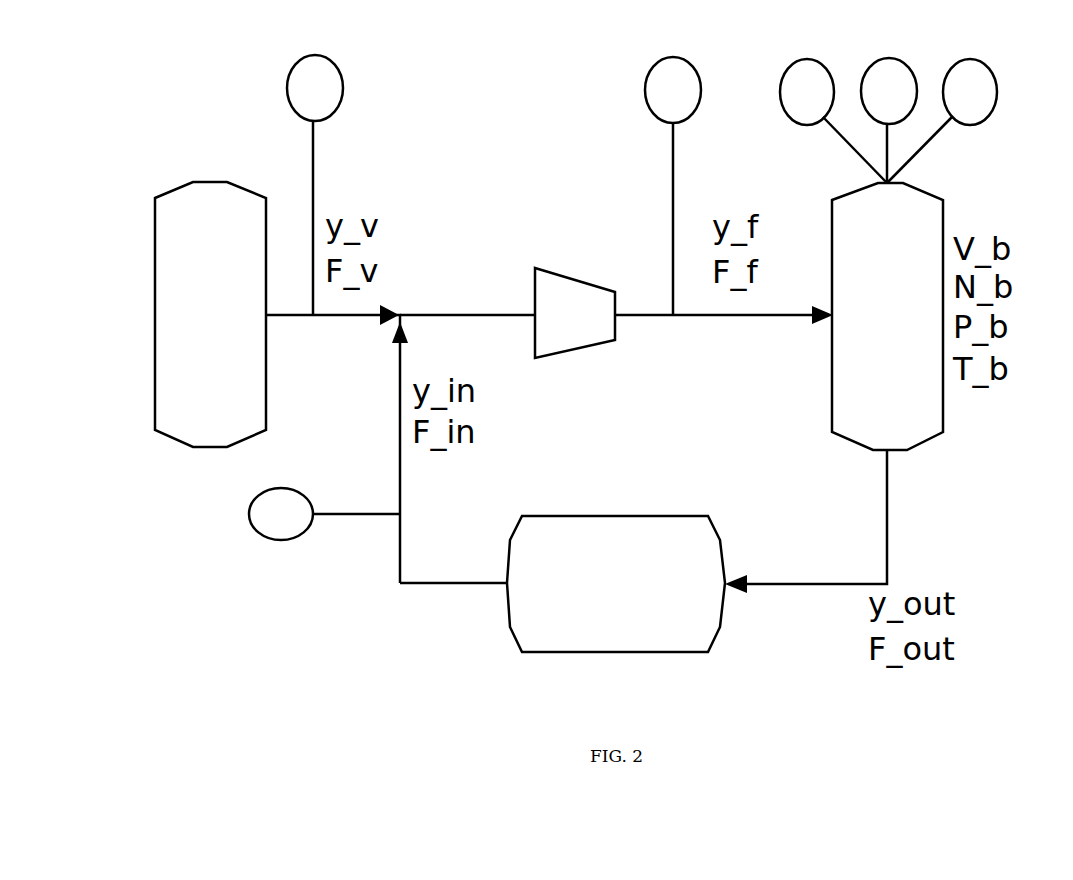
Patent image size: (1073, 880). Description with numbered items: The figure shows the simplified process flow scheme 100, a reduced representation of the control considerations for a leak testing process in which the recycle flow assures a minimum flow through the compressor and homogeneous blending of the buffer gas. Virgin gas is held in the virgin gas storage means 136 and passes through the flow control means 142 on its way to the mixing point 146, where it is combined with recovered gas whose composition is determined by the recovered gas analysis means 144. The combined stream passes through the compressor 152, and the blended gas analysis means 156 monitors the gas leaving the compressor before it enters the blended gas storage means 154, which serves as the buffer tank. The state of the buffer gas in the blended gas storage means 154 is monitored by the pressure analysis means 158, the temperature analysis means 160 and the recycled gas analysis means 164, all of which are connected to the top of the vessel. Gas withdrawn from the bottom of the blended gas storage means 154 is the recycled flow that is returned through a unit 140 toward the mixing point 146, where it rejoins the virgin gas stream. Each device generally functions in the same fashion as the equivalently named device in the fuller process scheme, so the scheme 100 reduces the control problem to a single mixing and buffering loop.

The simplified process flow scheme 100 is at (493, 78).
The virgin gas storage means 136 is at (222, 442).
The heat exchanger 140 is at (625, 526).
The flow control means 142 is at (328, 82).
The recovered gas analysis means 144 is at (287, 530).
The mixing point 146 is at (398, 315).
The compressor 152 is at (540, 352).
The blended gas storage means 154 is at (840, 432).
The blended gas analysis means 156 is at (690, 80).
The pressure analysis means 158 is at (893, 77).
The temperature analysis means 160 is at (980, 75).
The recycled gas analysis means 164 is at (808, 78).